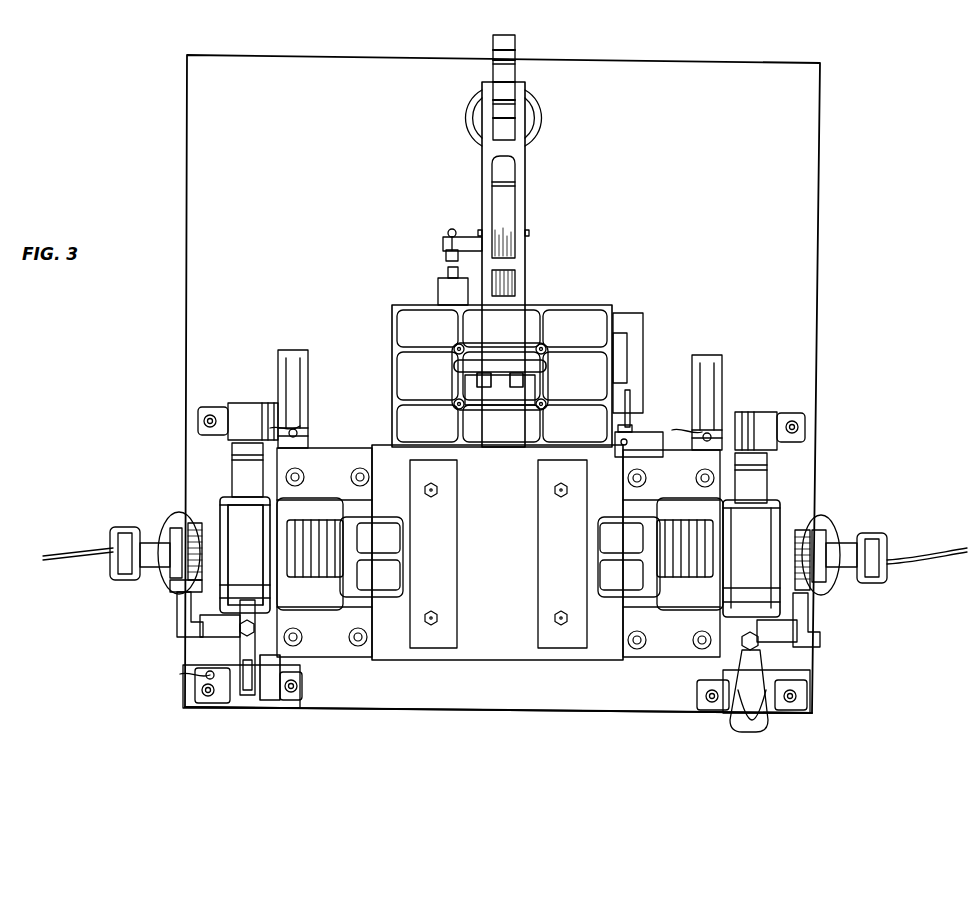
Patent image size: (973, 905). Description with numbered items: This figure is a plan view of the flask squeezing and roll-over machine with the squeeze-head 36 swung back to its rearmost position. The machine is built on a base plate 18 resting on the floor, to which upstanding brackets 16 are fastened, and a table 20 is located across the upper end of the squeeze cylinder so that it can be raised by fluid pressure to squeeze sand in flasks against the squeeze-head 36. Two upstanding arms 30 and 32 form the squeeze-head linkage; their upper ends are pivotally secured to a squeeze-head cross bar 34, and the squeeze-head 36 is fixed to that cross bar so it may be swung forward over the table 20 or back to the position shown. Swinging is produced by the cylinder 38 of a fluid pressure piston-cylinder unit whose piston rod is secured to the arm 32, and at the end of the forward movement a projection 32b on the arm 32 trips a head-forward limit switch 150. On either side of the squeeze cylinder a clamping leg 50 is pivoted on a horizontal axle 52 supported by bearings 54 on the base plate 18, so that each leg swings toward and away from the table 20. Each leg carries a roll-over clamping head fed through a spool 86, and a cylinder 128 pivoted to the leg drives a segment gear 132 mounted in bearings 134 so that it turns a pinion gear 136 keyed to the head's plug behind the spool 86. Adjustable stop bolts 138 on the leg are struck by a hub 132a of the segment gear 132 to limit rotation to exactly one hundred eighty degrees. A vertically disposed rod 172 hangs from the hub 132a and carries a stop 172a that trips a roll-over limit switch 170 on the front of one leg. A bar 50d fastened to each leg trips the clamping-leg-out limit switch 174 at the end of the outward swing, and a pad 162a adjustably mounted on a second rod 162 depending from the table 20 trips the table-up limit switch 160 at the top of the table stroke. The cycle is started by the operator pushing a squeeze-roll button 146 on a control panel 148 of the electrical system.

The upstanding brackets 16 is at (346, 658).
The base plate 18 is at (343, 706).
The table 20 is at (495, 652).
The upstanding arm 30 is at (505, 220).
The upstanding arm 32 is at (515, 43).
The projection 32b is at (440, 242).
The squeeze-head cross bar 34 is at (482, 203).
The squeeze-head 36 is at (578, 314).
The cylinder 38 is at (525, 134).
The clamping leg 50 is at (240, 498).
The bar 50d is at (280, 407).
The horizontal axle 52 is at (252, 407).
The bearings 54 is at (236, 407).
The spool 86 is at (122, 554).
The cylinder 128 is at (183, 525).
The segment gear 132 is at (177, 622).
The hub 132a is at (280, 668).
The bearings 134 is at (198, 639).
The pinion gear 136 is at (172, 588).
The adjustable stop bolts 138 is at (247, 590).
The squeeze-roll button 146 is at (720, 713).
The control panel 148 is at (756, 734).
The head-forward limit switch 150 is at (438, 283).
The table-up limit switch 160 is at (623, 355).
The second rod 162 is at (628, 446).
The pad 162a is at (628, 428).
The roll-over limit switch 170 is at (195, 680).
The vertically disposed rod 172 is at (256, 705).
The stop 172a is at (246, 705).
The clamping-leg-out limit switch 174 is at (295, 430).